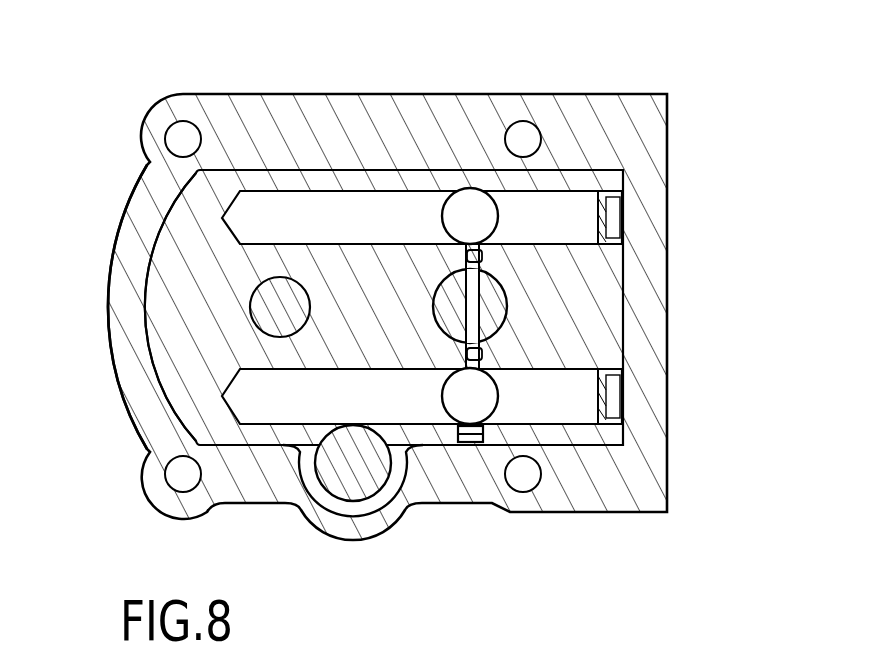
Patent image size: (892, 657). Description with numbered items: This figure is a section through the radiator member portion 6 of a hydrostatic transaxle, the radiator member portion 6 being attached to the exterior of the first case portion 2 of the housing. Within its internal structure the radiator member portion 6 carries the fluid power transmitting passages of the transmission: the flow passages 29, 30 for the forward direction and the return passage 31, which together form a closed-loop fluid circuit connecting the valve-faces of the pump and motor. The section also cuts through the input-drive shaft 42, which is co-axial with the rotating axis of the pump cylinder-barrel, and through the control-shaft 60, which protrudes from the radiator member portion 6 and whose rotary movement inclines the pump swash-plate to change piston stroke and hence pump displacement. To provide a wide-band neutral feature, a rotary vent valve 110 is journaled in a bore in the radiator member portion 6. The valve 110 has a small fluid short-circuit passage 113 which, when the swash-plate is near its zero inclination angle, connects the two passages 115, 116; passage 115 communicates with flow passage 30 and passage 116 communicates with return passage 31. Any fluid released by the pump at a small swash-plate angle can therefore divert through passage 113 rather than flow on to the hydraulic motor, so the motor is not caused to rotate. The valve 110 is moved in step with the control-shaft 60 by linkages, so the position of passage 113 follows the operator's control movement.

The first case portion 2 is at (260, 123).
The radiator member portion 6 is at (187, 308).
The flow passage 29 is at (348, 235).
The flow passage 30 is at (493, 217).
The return passage 31 is at (303, 412).
The input-drive shaft 42 is at (280, 302).
The control-shaft 60 is at (372, 468).
The rotary vent valve 110 is at (505, 289).
The passage 113 is at (478, 300).
The passage 115 is at (620, 238).
The passage 116 is at (483, 351).